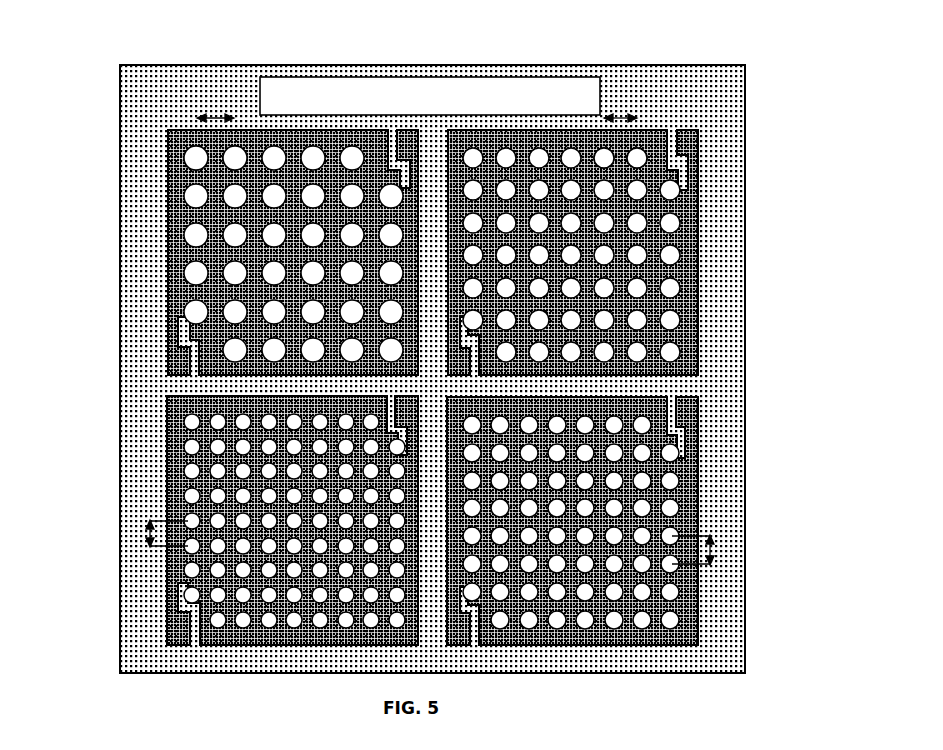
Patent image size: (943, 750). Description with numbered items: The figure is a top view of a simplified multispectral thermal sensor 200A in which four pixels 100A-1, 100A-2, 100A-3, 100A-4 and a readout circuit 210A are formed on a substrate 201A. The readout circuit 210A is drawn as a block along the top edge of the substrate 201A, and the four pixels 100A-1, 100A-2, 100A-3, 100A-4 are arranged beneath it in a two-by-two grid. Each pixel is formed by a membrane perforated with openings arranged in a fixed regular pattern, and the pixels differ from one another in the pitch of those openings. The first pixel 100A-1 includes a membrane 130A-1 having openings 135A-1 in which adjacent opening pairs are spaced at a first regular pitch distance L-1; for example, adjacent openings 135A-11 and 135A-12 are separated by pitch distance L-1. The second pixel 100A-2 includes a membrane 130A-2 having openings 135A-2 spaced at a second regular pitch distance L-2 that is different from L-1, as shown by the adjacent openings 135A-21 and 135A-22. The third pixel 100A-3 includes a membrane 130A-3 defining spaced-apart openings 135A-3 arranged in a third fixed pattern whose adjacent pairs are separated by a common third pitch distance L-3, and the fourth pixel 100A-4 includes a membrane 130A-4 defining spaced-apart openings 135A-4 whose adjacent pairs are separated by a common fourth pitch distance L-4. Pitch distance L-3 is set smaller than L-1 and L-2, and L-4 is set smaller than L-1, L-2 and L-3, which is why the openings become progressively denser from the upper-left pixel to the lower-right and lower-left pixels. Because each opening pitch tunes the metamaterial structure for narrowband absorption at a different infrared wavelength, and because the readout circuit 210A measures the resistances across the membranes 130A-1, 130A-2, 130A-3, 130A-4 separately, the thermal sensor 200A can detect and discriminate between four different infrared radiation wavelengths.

The multispectral thermal sensor 200A is at (88, 50).
The substrate 201A is at (127, 330).
The readout circuit 210A is at (430, 96).
The pixel 100A-1 is at (153, 174).
The second pixel 100A-2 is at (708, 167).
The pixel 100A-3 is at (706, 437).
The pixel 100A-4 is at (152, 443).
The membrane 130A-1 is at (172, 212).
The membrane 130A-2 is at (698, 233).
The membrane 130A-3 is at (698, 490).
The membrane 130A-4 is at (168, 480).
The openings 135A-1 is at (192, 272).
The openings 135A-2 is at (670, 288).
The openings 135A-3 is at (672, 536).
The openings 135A-4 is at (188, 520).
The opening 135A-11 is at (193, 152).
The opening 135A-12 is at (236, 153).
The opening 135A-21 is at (602, 152).
The opening 135A-22 is at (640, 153).
The first regular pitch distance L-1 is at (215, 118).
The second regular pitch distance L-2 is at (618, 118).
The third pitch distance L-3 is at (710, 553).
The fourth pitch distance L-4 is at (150, 533).